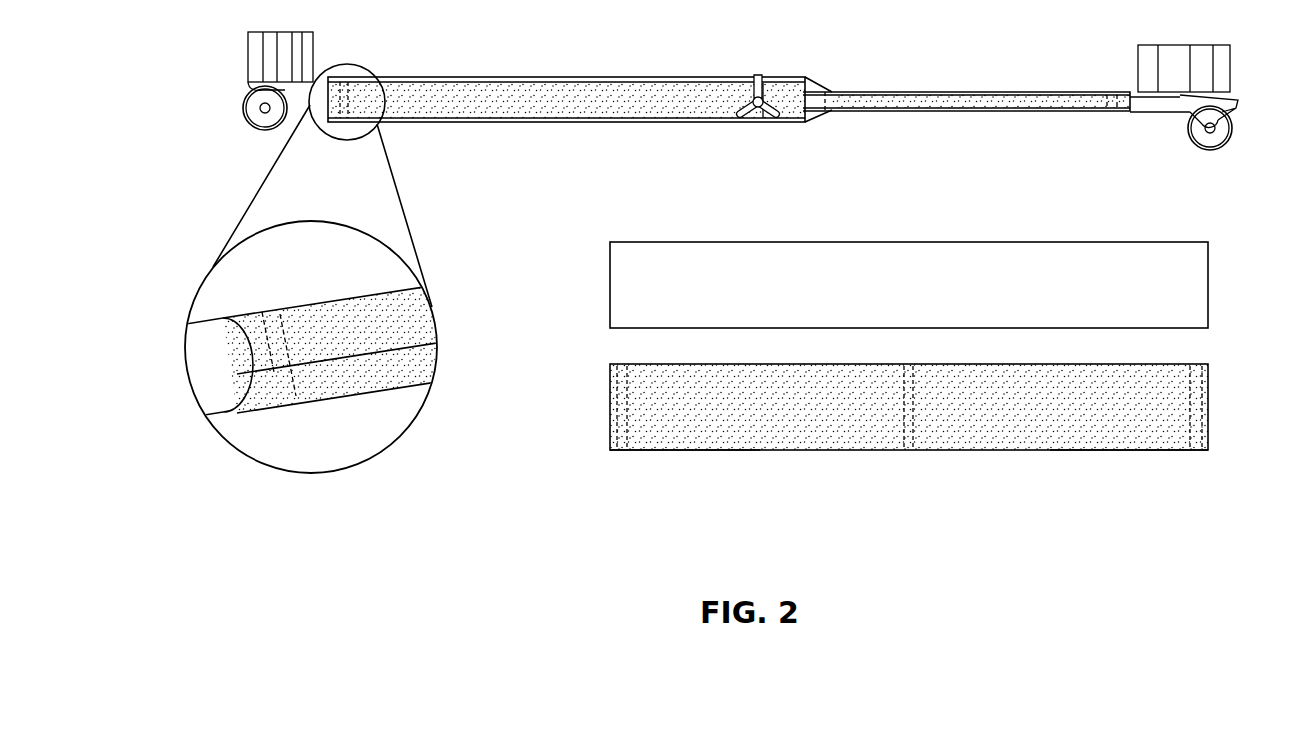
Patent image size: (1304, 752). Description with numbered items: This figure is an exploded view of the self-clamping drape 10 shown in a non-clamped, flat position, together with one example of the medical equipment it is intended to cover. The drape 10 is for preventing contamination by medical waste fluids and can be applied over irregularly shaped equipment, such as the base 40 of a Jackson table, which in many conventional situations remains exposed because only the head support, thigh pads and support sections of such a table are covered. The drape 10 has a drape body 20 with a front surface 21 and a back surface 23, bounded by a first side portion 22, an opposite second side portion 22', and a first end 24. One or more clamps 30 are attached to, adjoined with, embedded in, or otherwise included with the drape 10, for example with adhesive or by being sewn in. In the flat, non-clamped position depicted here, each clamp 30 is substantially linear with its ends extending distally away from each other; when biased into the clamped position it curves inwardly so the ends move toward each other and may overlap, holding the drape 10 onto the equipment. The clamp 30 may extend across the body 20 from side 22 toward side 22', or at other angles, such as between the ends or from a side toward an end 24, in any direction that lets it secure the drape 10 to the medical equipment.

The self-clamping drape 10 is at (370, 387).
The drape body 20 is at (397, 315).
The front surface 21 is at (1107, 243).
The first side portion 22 is at (870, 391).
The second side portion 22' is at (678, 510).
The back surface 23 is at (1150, 452).
The first end 24 is at (608, 410).
The clamp 30 is at (347, 92).
The base 40 is at (1130, 112).